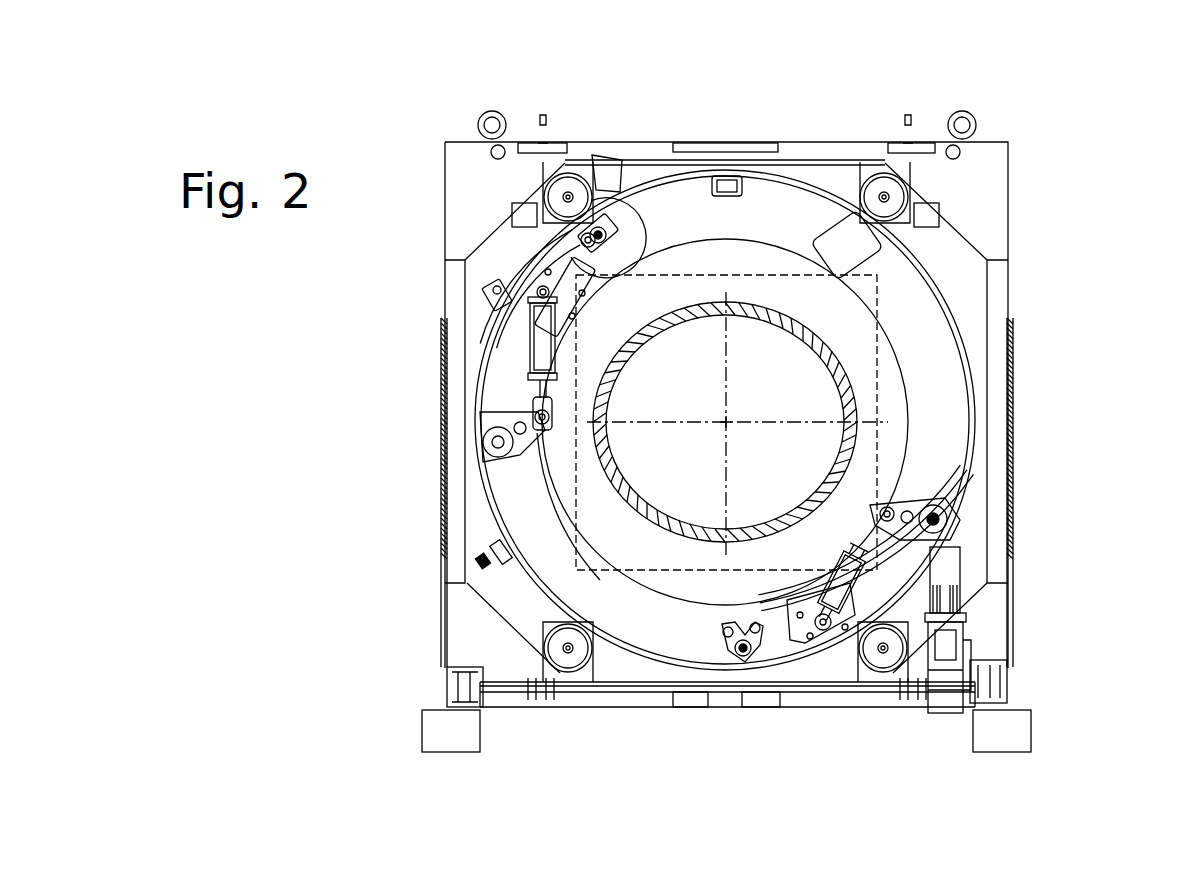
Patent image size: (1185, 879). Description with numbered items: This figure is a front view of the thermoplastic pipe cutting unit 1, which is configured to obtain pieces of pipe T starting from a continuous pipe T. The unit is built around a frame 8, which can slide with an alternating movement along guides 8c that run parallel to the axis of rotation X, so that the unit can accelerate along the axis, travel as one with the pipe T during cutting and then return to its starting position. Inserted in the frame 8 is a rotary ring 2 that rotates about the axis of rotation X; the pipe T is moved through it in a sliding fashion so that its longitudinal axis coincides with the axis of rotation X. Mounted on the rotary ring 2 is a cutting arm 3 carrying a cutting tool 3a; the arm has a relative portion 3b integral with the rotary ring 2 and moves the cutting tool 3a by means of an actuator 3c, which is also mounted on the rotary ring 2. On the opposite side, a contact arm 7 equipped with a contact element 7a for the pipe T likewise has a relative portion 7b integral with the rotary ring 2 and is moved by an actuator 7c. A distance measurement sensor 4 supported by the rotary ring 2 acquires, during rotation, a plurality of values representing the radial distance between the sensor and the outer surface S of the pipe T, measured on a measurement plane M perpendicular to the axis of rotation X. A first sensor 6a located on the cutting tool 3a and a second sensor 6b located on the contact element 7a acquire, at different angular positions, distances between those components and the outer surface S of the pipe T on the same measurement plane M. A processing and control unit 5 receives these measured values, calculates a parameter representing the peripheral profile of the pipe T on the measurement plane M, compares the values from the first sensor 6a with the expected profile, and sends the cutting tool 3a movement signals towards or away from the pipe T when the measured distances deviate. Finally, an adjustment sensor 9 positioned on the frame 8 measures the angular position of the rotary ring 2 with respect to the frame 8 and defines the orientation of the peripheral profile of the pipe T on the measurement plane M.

The thermoplastic pipe cutting unit 1 is at (1048, 136).
The rotary ring 2 is at (537, 530).
The cutting arm 3 is at (517, 377).
The cutting tool 3a is at (615, 188).
The relative portion of the cutting arm 3b is at (543, 292).
The actuator of the cutting arm 3c is at (457, 438).
The distance measurement sensor 4 is at (738, 177).
The processing and control unit 5 is at (842, 261).
The first sensor 6a is at (606, 215).
The second sensor 6b is at (757, 652).
The contact arm 7 is at (900, 550).
The contact element 7a is at (727, 650).
The relative portion of the contact arm 7b is at (828, 652).
The actuator of the contact arm 7c is at (957, 515).
The frame 8 is at (1014, 486).
The guides 8c is at (1002, 745).
The adjustment sensor 9 is at (493, 557).
The measurement plane M is at (878, 354).
The outer surface of the pipe S is at (700, 303).
The pipe T is at (862, 405).
The axis of rotation X is at (726, 422).